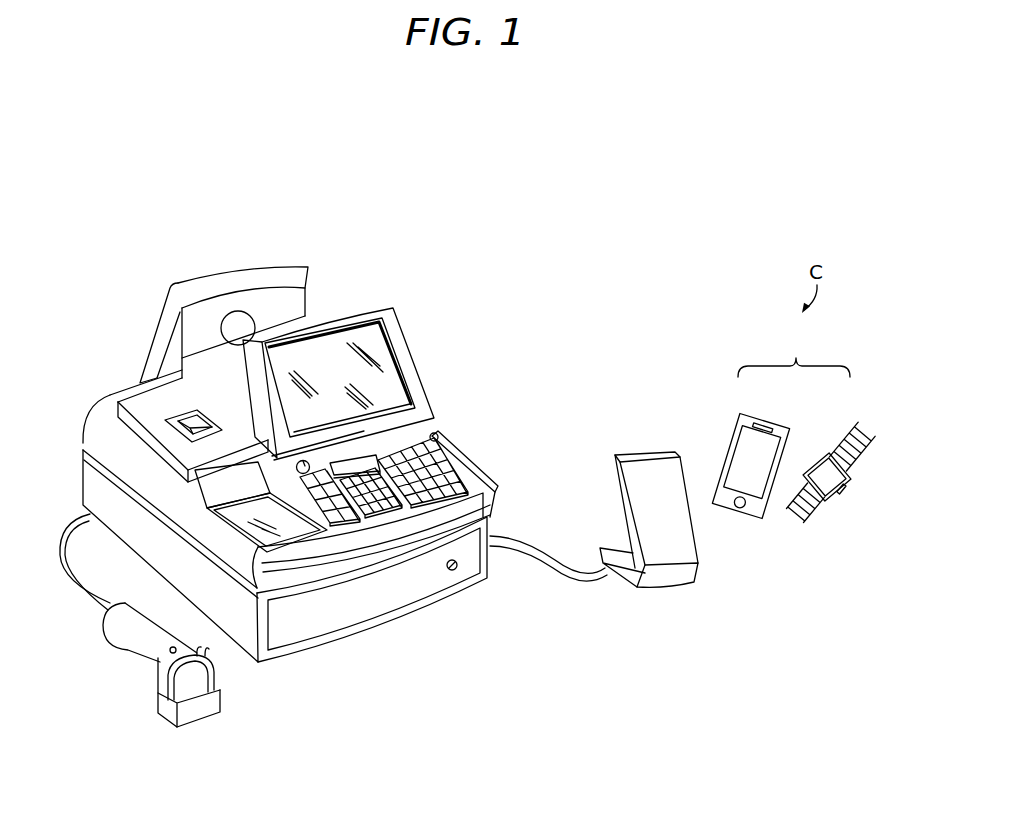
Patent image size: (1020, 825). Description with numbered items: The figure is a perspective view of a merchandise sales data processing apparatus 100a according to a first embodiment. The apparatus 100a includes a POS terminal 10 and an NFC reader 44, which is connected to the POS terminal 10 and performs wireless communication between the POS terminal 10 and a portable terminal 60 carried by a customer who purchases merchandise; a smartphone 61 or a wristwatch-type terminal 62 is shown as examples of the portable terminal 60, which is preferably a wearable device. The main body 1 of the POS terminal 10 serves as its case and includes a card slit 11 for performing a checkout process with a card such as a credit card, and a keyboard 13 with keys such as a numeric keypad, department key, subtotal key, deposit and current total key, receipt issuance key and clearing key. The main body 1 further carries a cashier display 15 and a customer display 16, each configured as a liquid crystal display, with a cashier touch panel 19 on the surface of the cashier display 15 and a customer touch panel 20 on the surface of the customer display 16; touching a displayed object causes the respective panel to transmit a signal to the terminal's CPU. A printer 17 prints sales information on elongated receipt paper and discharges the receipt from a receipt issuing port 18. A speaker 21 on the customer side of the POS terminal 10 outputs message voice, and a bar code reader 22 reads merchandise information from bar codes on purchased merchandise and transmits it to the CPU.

The merchandise sales data processing apparatus 100a is at (528, 167).
The main body 1 is at (103, 422).
The POS terminal 10 is at (406, 296).
The card slit 11 is at (436, 437).
The keyboard 13 is at (458, 475).
The cashier display 15 is at (392, 381).
The customer display 16 is at (163, 322).
The printer 17 is at (148, 405).
The receipt issuing port 18 is at (183, 428).
The cashier touch panel 19 is at (351, 317).
The customer touch panel 20 is at (172, 290).
The speaker 21 is at (102, 398).
The bar code reader 22 is at (134, 650).
The NFC reader 44 is at (640, 448).
The portable terminal 60 is at (794, 356).
The smartphone 61 is at (762, 415).
The wristwatch-type terminal 62 is at (827, 452).